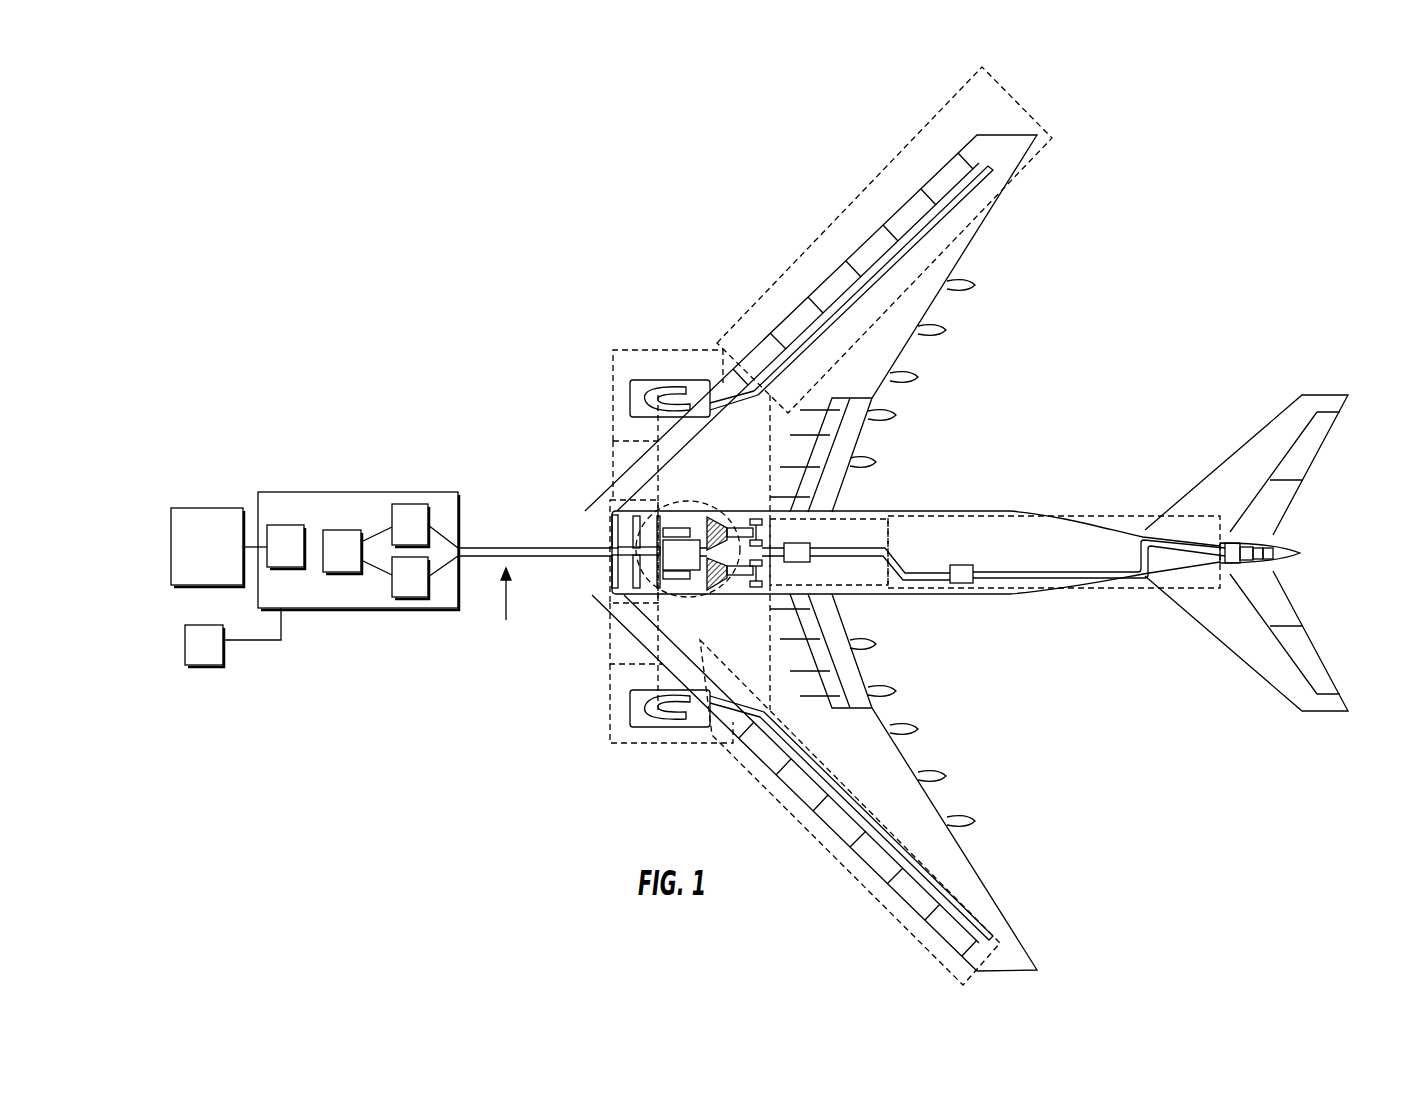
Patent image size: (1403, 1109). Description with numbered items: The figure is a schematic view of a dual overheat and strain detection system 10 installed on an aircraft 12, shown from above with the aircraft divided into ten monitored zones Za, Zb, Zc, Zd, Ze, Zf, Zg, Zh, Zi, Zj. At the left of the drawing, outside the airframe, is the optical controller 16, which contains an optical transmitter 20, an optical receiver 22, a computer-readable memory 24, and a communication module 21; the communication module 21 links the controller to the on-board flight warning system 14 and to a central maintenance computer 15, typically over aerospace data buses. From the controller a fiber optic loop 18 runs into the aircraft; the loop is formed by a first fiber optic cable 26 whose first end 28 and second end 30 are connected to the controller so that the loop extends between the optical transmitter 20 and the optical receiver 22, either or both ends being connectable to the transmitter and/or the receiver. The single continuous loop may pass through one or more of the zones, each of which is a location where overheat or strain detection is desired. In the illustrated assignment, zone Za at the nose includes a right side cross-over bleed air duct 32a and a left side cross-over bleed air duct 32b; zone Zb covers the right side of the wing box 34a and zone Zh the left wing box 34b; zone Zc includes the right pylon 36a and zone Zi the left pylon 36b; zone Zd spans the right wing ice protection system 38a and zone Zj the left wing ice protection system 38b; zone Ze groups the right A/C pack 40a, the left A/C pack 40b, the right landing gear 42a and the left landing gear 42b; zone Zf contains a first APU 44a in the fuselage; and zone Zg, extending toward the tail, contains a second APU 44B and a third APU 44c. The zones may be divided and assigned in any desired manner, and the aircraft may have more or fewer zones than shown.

The dual overheat and strain detection system 10 is at (506, 343).
The aircraft 12 is at (920, 648).
The flight warning system 14 is at (219, 560).
The central maintenance computer 15 is at (200, 645).
The optical controller 16 is at (332, 492).
The fiber optic loop 18 is at (507, 608).
The optical transmitter 20 is at (410, 505).
The communication module 21 is at (267, 530).
The optical receiver 22 is at (407, 585).
The computer-readable memory 24 is at (340, 560).
The first fiber optic cable 26 is at (848, 562).
The first end 28 is at (458, 547).
The second end 30 is at (458, 557).
The right side cross-over bleed air duct 32a is at (628, 532).
The left side cross-over bleed air duct 32b is at (626, 575).
The right side of the wing box 34a is at (640, 457).
The left wing box 34b is at (660, 668).
The right pylon 36a is at (648, 380).
The left pylon 36b is at (667, 727).
The right wing ice protection system 38a is at (887, 230).
The left wing ice protection system 38b is at (848, 855).
The right A/C pack 40a is at (683, 530).
The left A/C pack 40b is at (672, 578).
The right landing gear 42a is at (749, 550).
The left landing gear 42b is at (739, 593).
The first APU 44a is at (806, 543).
The second APU 44B is at (965, 565).
The third APU 44c is at (1220, 543).
The zone Za is at (610, 575).
The zone Zb is at (613, 455).
The zone Zc is at (613, 367).
The zone Zd is at (917, 138).
The zone Ze is at (772, 690).
The zone Zf is at (880, 585).
The zone Zg is at (1000, 517).
The zone Zh is at (600, 645).
The zone Zi is at (697, 743).
The zone Zj is at (902, 915).